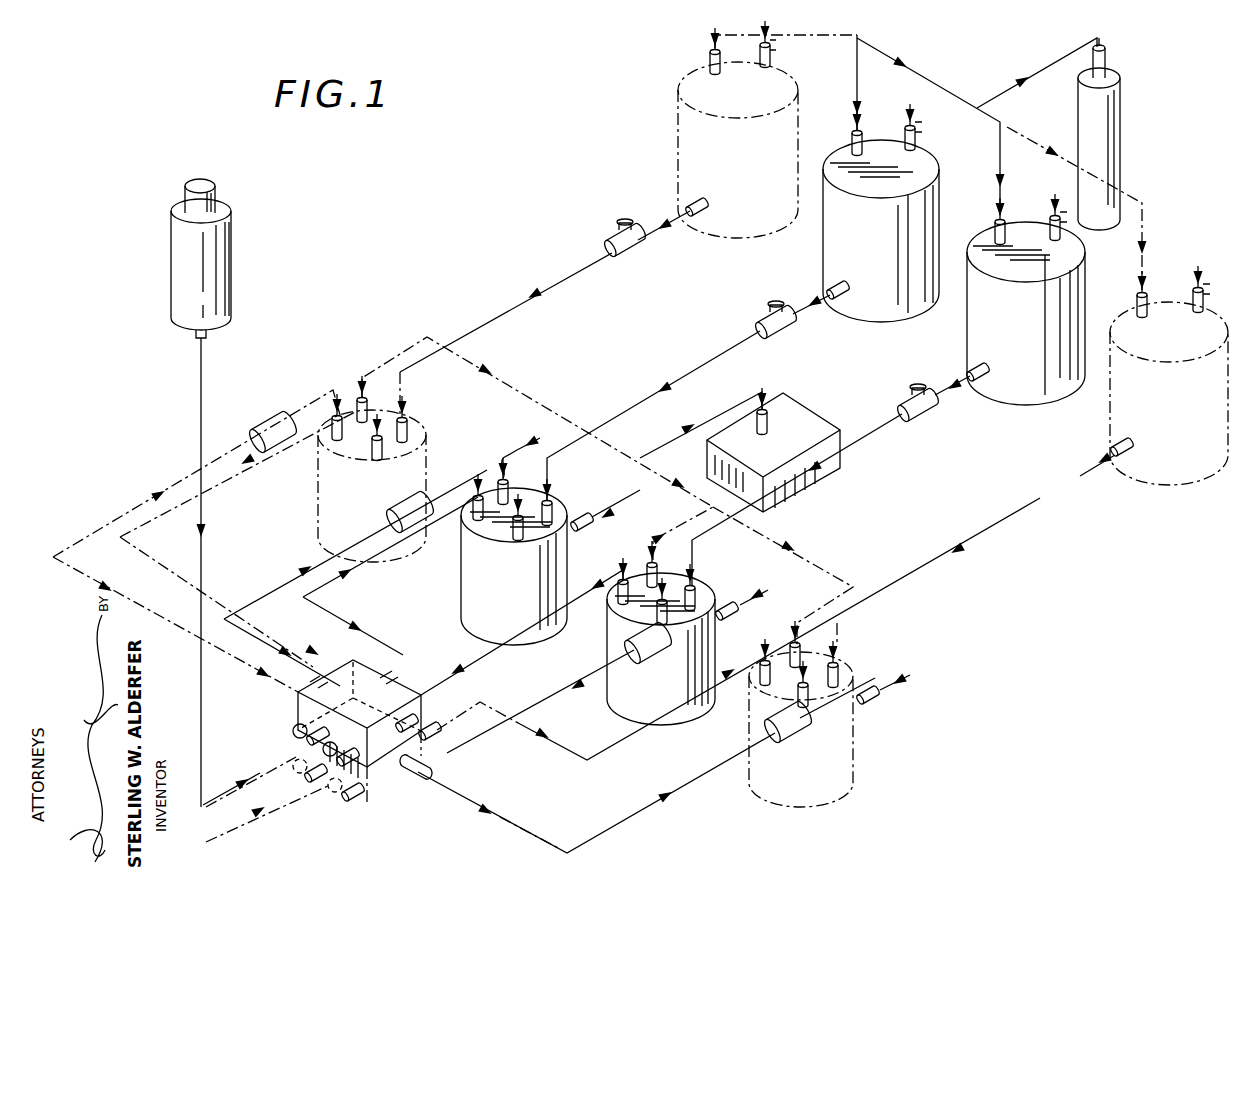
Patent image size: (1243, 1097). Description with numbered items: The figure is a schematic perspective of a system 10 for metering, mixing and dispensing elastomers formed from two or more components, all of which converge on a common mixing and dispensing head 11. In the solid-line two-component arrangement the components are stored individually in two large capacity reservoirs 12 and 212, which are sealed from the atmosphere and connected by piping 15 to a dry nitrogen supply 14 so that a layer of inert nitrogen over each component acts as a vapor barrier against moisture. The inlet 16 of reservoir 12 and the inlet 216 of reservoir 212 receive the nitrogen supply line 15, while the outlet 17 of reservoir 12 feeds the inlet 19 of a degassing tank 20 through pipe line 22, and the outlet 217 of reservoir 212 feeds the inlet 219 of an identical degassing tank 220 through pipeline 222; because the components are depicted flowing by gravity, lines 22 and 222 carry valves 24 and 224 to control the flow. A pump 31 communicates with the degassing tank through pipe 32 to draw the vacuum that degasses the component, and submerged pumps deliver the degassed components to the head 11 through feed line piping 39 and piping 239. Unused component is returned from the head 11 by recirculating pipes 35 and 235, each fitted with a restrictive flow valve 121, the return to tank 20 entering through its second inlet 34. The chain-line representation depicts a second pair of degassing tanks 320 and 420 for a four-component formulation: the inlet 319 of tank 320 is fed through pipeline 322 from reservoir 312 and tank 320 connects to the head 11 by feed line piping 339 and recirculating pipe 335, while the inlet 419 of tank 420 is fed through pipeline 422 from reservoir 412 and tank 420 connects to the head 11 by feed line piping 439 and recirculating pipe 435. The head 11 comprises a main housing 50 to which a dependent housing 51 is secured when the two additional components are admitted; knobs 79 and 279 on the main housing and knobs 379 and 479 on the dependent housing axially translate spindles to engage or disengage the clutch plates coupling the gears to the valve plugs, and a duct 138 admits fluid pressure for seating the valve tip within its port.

The system 10 is at (975, 628).
The mixing head 11 is at (385, 798).
The reservoir 12 is at (881, 213).
The dry nitrogen supply 14 is at (1117, 138).
The piping 15 is at (990, 98).
The inlet 16 is at (857, 138).
The outlet 17 is at (850, 292).
The inlet 19 is at (553, 506).
The degassing tank 20 is at (550, 559).
The pipe line 22 is at (700, 360).
The valve 24 is at (786, 340).
The pump 31 is at (802, 413).
The pipe 32 is at (538, 460).
The second inlet 34 is at (516, 536).
The recirculating pipe 35 is at (283, 583).
The feed line piping 39 is at (338, 568).
The main housing 50 is at (393, 688).
The dependent housing 51 is at (358, 810).
The knob 79 is at (293, 729).
The restrictive flow valve 121 is at (276, 428).
The second duct 138 is at (292, 760).
The reservoir 212 is at (1026, 299).
The inlet 216 is at (1000, 225).
The outlet 217 is at (985, 375).
The inlet 219 is at (697, 597).
The degassing tank 220 is at (687, 641).
The pipeline 222 is at (872, 440).
The valve 224 is at (928, 422).
The recirculating pipe 235 is at (547, 703).
The piping 239 is at (488, 652).
The knob 279 is at (390, 772).
The reservoir 312 is at (738, 129).
The inlet 319 is at (408, 426).
The degassing tank 320 is at (372, 469).
The pipeline 322 is at (503, 312).
The recirculating pipe 335 is at (136, 498).
The feed line piping 339 is at (235, 470).
The knob 379 is at (249, 782).
The reservoir 412 is at (1169, 375).
The inlet 419 is at (842, 667).
The degassing tank 420 is at (829, 714).
The pipeline 422 is at (990, 528).
The recirculating pipe 435 is at (653, 805).
The feed line piping 439 is at (623, 742).
The knob 479 is at (318, 795).